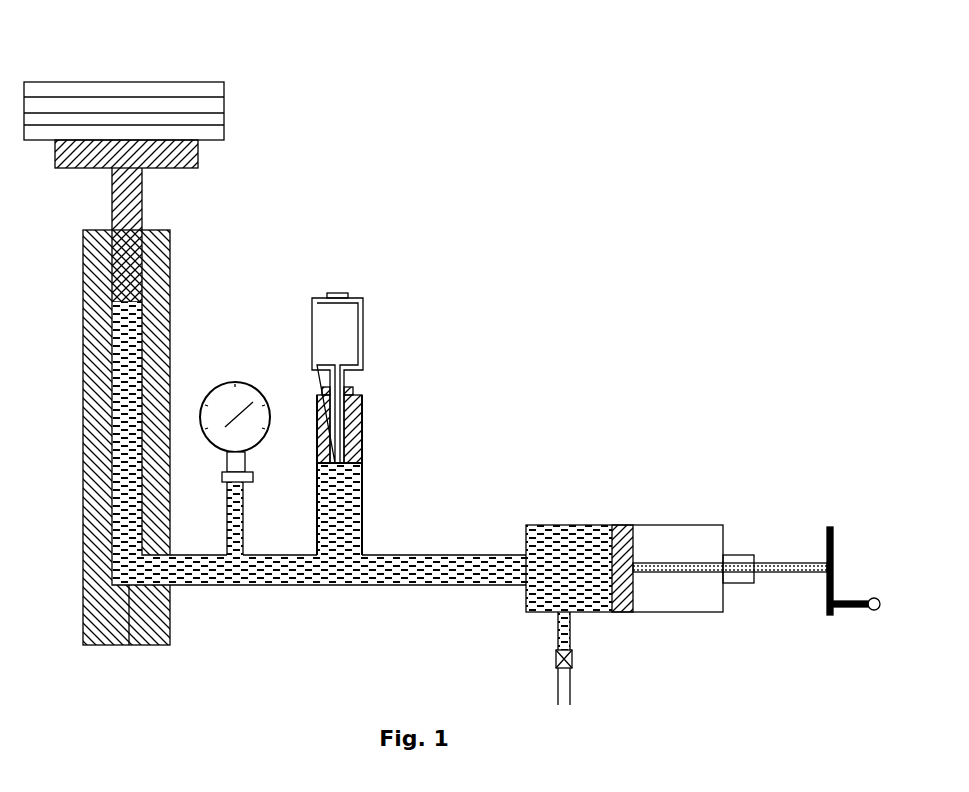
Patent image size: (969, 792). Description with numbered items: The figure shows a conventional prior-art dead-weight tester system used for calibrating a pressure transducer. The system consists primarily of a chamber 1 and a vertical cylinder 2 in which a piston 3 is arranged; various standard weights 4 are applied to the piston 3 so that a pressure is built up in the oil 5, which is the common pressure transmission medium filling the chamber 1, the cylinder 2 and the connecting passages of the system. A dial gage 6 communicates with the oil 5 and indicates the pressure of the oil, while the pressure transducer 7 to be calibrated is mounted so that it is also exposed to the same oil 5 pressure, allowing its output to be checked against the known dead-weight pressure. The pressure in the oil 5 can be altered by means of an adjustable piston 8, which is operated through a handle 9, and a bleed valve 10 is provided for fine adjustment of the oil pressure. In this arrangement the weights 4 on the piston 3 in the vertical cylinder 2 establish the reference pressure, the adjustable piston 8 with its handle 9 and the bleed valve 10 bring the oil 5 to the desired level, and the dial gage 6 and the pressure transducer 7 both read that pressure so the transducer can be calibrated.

The chamber 1 is at (422, 553).
The vertical cylinder 2 is at (170, 620).
The piston 3 is at (198, 168).
The standard weights 4 is at (224, 96).
The oil 5 is at (343, 540).
The dial gage 6 is at (235, 383).
The pressure transducer 7 is at (363, 298).
The adjustable piston 8 is at (624, 540).
The handle 9 is at (848, 610).
The bleed valve 10 is at (572, 658).